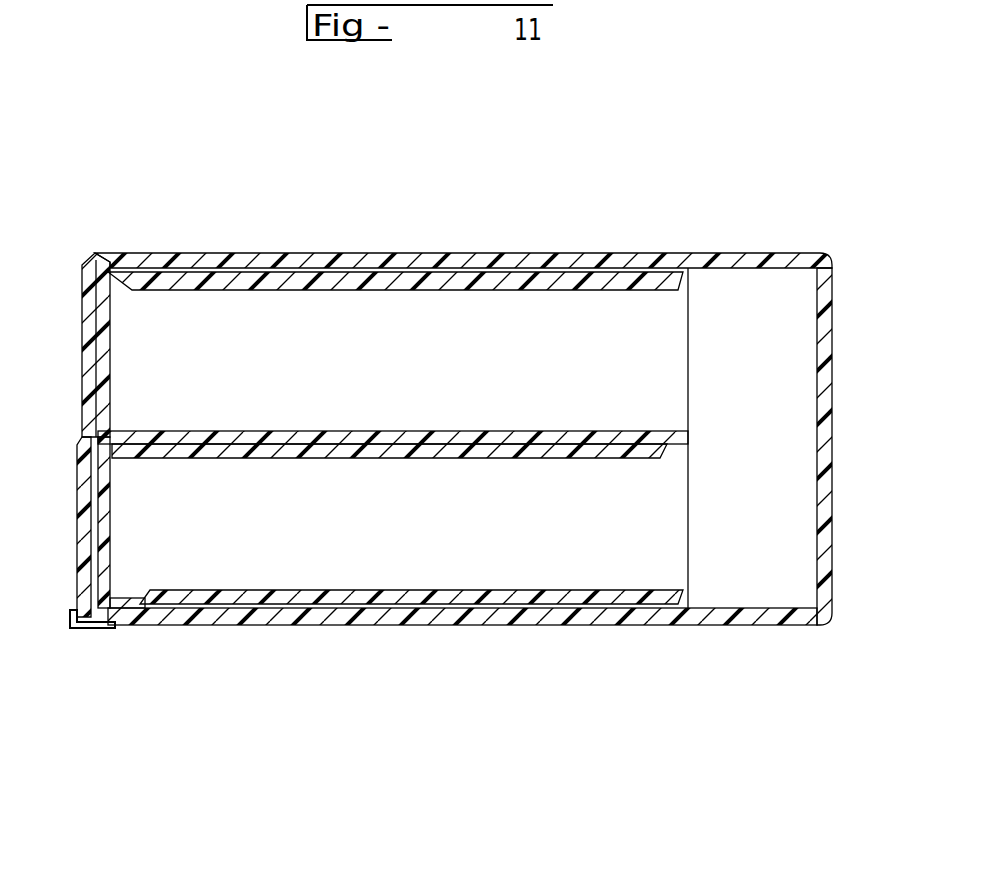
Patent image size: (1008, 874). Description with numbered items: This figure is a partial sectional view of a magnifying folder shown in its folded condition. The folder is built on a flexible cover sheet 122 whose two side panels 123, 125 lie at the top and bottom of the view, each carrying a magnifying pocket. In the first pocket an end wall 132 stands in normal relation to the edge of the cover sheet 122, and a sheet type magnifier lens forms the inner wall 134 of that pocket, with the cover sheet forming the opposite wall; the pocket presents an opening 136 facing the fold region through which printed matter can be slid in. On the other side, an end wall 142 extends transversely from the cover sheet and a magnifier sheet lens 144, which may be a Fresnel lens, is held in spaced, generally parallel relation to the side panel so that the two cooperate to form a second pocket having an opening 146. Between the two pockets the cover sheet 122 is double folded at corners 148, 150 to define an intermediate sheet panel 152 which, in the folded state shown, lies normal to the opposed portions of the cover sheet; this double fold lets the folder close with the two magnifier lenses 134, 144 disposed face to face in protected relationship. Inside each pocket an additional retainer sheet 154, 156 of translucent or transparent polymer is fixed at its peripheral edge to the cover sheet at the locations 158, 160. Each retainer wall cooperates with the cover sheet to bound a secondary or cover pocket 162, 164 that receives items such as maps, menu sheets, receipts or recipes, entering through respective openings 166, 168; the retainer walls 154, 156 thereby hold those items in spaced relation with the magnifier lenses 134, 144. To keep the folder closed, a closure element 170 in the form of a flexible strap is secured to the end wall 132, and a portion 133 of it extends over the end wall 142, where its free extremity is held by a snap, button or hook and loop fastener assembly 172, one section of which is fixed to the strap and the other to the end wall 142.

The cover sheet 122 is at (515, 253).
The side panel 123 is at (252, 262).
The side panel 125 is at (293, 616).
The end wall 132 is at (108, 316).
The portion of closure strap 133 is at (75, 630).
The inner wall (sheet type magnifier lens) 134 is at (640, 432).
The opening 136 is at (652, 350).
The end wall 142 is at (105, 555).
The magnifier sheet lens 144 is at (660, 457).
The opening 146 is at (664, 543).
The fold corner 148 is at (830, 252).
The fold corner 150 is at (833, 630).
The intermediate sheet panel 152 is at (826, 418).
The retainer sheet 154 is at (442, 284).
The retainer sheet 156 is at (470, 594).
The fixed peripheral edge 158 is at (150, 256).
The fixed peripheral edge 160 is at (152, 622).
The secondary pocket 162 is at (597, 270).
The secondary pocket 164 is at (635, 603).
The opening 166 is at (704, 262).
The opening 168 is at (688, 602).
The closure element 170 is at (85, 496).
The retainer fastener assembly 172 is at (95, 632).